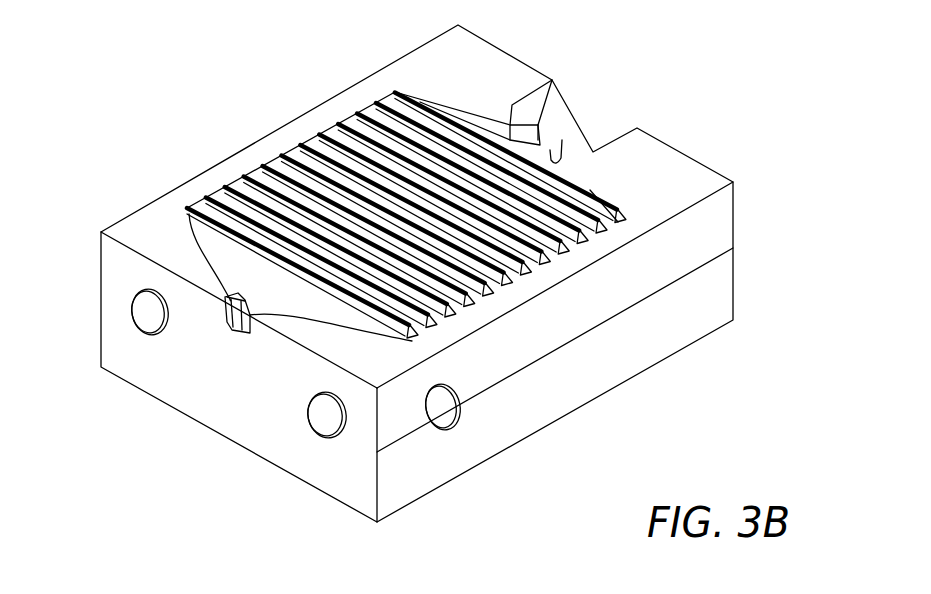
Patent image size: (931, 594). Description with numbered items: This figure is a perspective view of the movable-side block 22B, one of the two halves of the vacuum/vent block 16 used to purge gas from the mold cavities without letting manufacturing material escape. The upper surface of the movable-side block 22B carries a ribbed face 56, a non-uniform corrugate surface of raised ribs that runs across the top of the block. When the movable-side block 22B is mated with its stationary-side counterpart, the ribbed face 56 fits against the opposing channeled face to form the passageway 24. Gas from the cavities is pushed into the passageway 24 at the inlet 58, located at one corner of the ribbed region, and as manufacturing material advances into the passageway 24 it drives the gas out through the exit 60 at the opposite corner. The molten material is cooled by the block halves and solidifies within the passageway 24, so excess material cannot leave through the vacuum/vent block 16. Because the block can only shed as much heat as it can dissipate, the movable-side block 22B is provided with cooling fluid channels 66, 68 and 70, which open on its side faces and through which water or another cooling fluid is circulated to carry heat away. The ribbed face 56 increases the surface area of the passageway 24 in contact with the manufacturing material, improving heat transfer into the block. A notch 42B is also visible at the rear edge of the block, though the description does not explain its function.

The vacuum/vent block 16 is at (166, 114).
The movable-side block 22B is at (722, 176).
The passageway 24 is at (197, 265).
The locating notch 42B is at (540, 107).
The ribbed face 56 is at (590, 190).
The inlet 58 is at (224, 342).
The exit 60 is at (559, 142).
The cooling fluid channel 66 is at (333, 413).
The cooling fluid channel 68 is at (155, 317).
The cooling fluid channel 70 is at (447, 420).